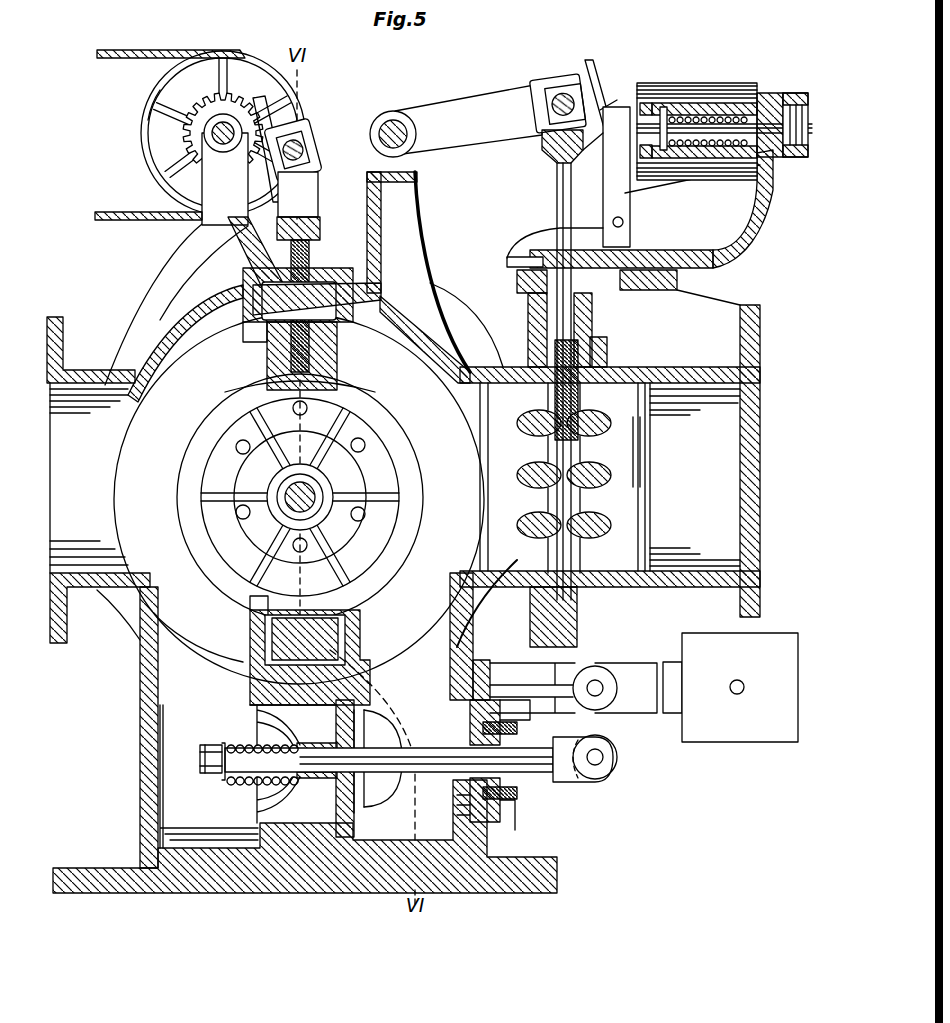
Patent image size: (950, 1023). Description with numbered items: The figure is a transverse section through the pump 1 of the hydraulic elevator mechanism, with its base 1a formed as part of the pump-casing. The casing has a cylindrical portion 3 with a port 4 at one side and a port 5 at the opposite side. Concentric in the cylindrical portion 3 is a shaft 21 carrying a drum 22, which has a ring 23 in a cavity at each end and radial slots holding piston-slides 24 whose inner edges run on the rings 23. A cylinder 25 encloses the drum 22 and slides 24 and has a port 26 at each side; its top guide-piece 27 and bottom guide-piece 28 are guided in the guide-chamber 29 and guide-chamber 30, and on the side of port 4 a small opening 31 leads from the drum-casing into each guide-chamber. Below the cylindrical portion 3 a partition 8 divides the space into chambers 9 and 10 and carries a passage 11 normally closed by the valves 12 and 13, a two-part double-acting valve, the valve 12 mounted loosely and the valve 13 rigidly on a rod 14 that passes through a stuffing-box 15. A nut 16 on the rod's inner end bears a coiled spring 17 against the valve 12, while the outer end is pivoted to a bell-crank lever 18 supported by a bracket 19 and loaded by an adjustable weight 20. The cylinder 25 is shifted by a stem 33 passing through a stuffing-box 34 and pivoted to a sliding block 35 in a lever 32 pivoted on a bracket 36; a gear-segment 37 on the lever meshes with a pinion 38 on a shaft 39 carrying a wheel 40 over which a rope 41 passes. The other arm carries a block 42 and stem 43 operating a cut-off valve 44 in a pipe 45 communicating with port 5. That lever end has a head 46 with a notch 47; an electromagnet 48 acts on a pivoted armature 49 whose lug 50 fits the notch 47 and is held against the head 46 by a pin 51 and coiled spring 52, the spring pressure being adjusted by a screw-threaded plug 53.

The pump 1 is at (172, 217).
The base 1a is at (305, 813).
The cylindrical portion 3 is at (299, 484).
The port 4 is at (98, 480).
The port 5 is at (495, 612).
The partition 8 is at (252, 690).
The chamber 9 is at (163, 727).
The chamber 10 is at (380, 745).
The passage 11 is at (258, 790).
The valve 12 is at (297, 727).
The valve 13 is at (360, 700).
The rod 14 is at (432, 745).
The stuffing-box 15 is at (500, 765).
The nut 16 is at (207, 744).
The coiled spring 17 is at (247, 744).
The bell-crank lever 18 is at (605, 722).
The bracket 19 is at (532, 687).
The weight 20 is at (730, 687).
The shaft 21 is at (280, 520).
The drum 22 is at (307, 435).
The ring 23 is at (352, 514).
The piston-slides 24 is at (300, 497).
The cylinder 25 is at (245, 392).
The port 26 is at (200, 490).
The guide-piece 27 is at (337, 360).
The guide-piece 28 is at (360, 610).
The guide-chamber 29 is at (298, 295).
The guide-chamber 30 is at (331, 639).
The opening 31 is at (250, 350).
The lever 32 is at (457, 120).
The stem 33 is at (320, 245).
The stuffing-box 34 is at (260, 258).
The block 35 is at (308, 130).
The bracket 36 is at (435, 272).
The gear-segment 37 is at (226, 126).
The pinion 38 is at (175, 100).
The shaft 39 is at (223, 144).
The wheel 40 is at (203, 133).
The rope 41 is at (148, 205).
The block 42 is at (560, 75).
The stem 43 is at (556, 210).
The cut-off valve 44 is at (564, 478).
The pipe 45 is at (610, 470).
The head 46 is at (592, 62).
The notch 47 is at (615, 81).
The electromagnet 48 is at (690, 103).
The armature 49 is at (612, 196).
The lug 50 is at (592, 160).
The pin 51 is at (663, 107).
The coiled spring 52 is at (735, 103).
The screw-threaded plug 53 is at (796, 137).